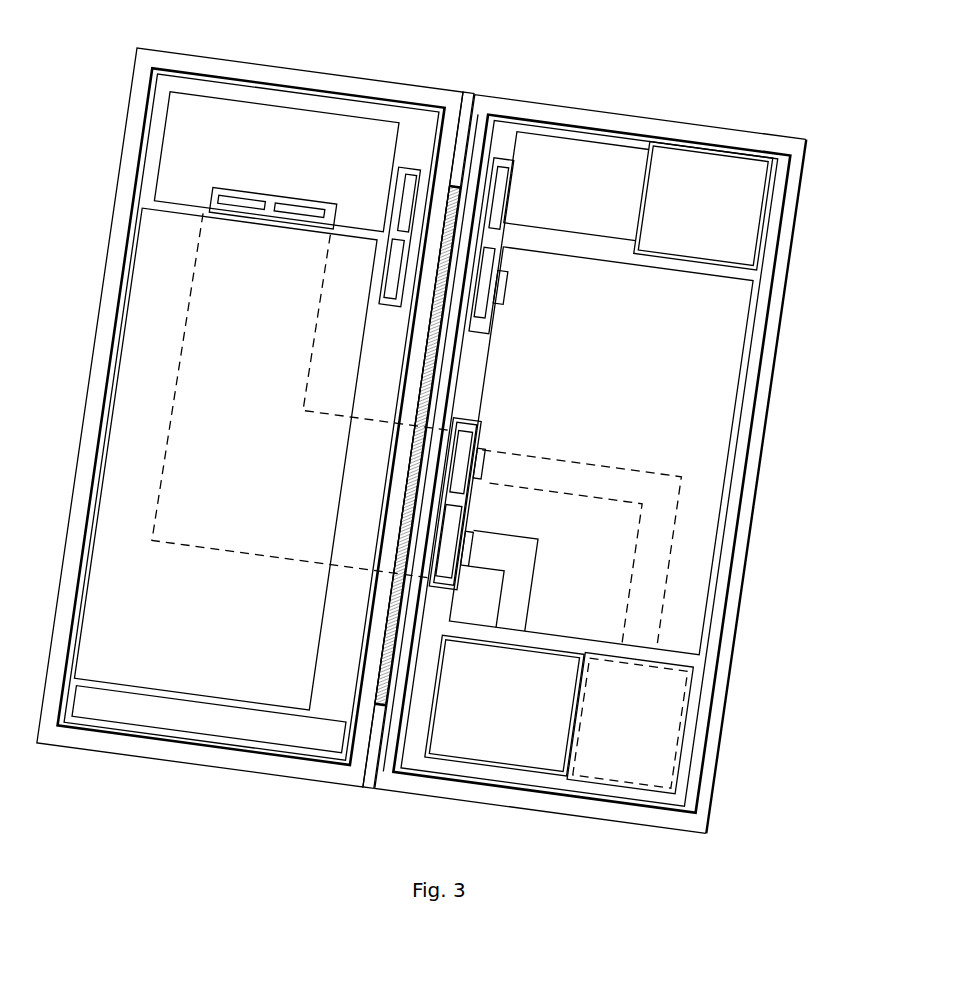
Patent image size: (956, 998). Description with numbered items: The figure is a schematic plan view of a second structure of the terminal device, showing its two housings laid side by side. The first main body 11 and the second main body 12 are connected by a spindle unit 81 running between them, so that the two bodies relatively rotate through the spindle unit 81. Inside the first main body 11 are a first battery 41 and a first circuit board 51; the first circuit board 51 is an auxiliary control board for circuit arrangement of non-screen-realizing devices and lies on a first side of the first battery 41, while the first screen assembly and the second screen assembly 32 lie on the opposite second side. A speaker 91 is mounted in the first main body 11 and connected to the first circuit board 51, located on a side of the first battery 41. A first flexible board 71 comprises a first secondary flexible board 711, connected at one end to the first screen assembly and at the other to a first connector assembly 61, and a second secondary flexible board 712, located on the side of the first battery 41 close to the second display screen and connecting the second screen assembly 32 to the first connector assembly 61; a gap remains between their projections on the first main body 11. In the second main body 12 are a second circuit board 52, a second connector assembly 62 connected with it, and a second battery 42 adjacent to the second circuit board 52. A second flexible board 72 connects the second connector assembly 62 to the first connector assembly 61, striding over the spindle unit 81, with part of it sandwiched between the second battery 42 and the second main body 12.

The first main body 11 is at (799, 181).
The second main body 12 is at (123, 147).
The second screen assembly 32 is at (480, 750).
The first battery 41 is at (722, 373).
The second battery 42 is at (135, 350).
The first circuit board 51 is at (555, 148).
The second circuit board 52 is at (276, 138).
The first connector assembly 61 is at (474, 424).
The second connector assembly 62 is at (296, 199).
The first flexible board 71 is at (598, 505).
The first secondary flexible board 711 is at (514, 482).
The second secondary flexible board 712 is at (527, 556).
The second flexible board 72 is at (253, 552).
The spindle unit 81 is at (428, 382).
The speaker 91 is at (682, 160).